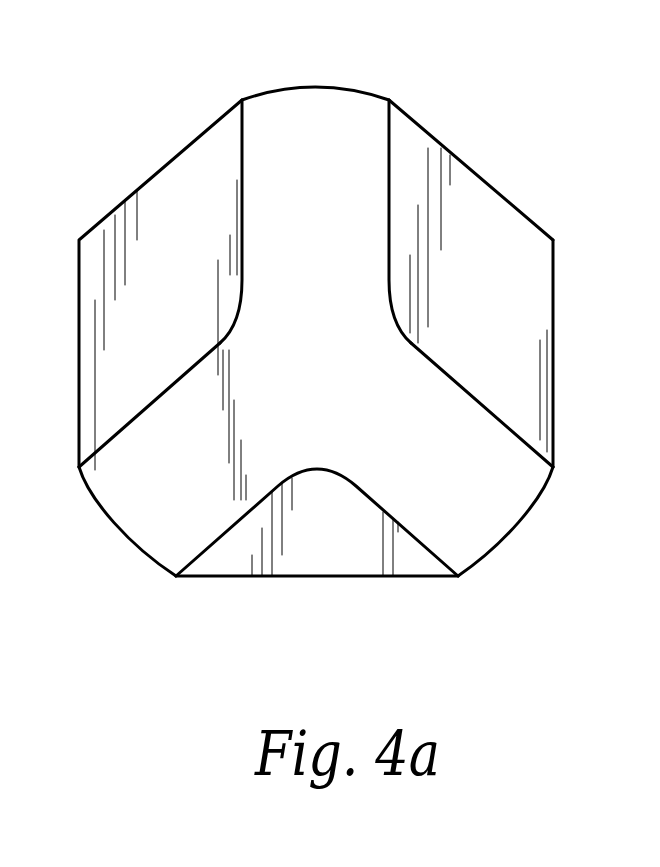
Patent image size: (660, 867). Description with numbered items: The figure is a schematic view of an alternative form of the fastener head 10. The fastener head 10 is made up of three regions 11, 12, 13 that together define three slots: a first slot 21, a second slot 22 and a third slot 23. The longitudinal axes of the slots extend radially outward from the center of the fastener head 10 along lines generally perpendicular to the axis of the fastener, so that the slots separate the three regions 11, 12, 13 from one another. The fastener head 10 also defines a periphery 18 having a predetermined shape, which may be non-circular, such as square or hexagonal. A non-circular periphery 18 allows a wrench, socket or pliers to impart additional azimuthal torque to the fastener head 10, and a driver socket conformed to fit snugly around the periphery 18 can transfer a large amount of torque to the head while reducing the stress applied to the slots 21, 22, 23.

The fastener head 10 is at (349, 380).
The region 11 is at (503, 270).
The region 12 is at (315, 553).
The region 13 is at (120, 245).
The periphery 18 is at (483, 175).
The first slot 21 is at (348, 132).
The second slot 22 is at (165, 533).
The third slot 23 is at (467, 539).